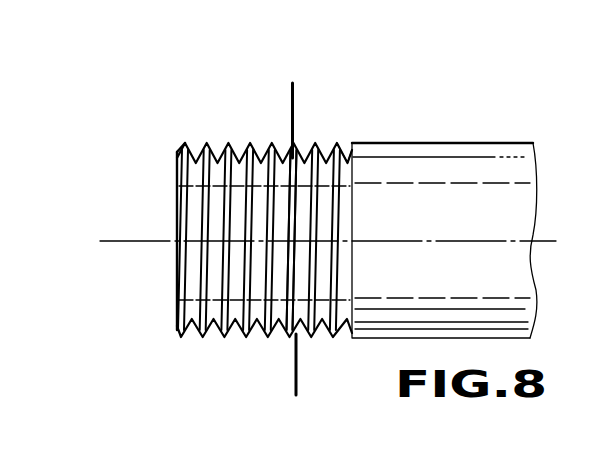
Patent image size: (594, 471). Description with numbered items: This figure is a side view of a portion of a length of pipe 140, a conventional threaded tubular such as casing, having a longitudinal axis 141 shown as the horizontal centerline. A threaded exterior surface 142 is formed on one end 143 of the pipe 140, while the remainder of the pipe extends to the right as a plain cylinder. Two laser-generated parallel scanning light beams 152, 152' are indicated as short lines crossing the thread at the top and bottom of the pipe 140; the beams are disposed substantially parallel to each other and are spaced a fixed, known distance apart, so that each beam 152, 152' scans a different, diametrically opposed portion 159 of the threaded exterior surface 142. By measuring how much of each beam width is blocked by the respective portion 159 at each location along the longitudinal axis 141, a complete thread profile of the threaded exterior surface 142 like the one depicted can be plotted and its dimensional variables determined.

The length of pipe 140 is at (180, 147).
The longitudinal axis 141 is at (122, 240).
The threaded exterior surface 142 is at (318, 150).
The end of the length of pipe 143 is at (352, 128).
The scanning light beam 152 is at (270, 106).
The scanning light beam 152' is at (239, 371).
The portion of the threaded exterior surface 159 is at (298, 150).